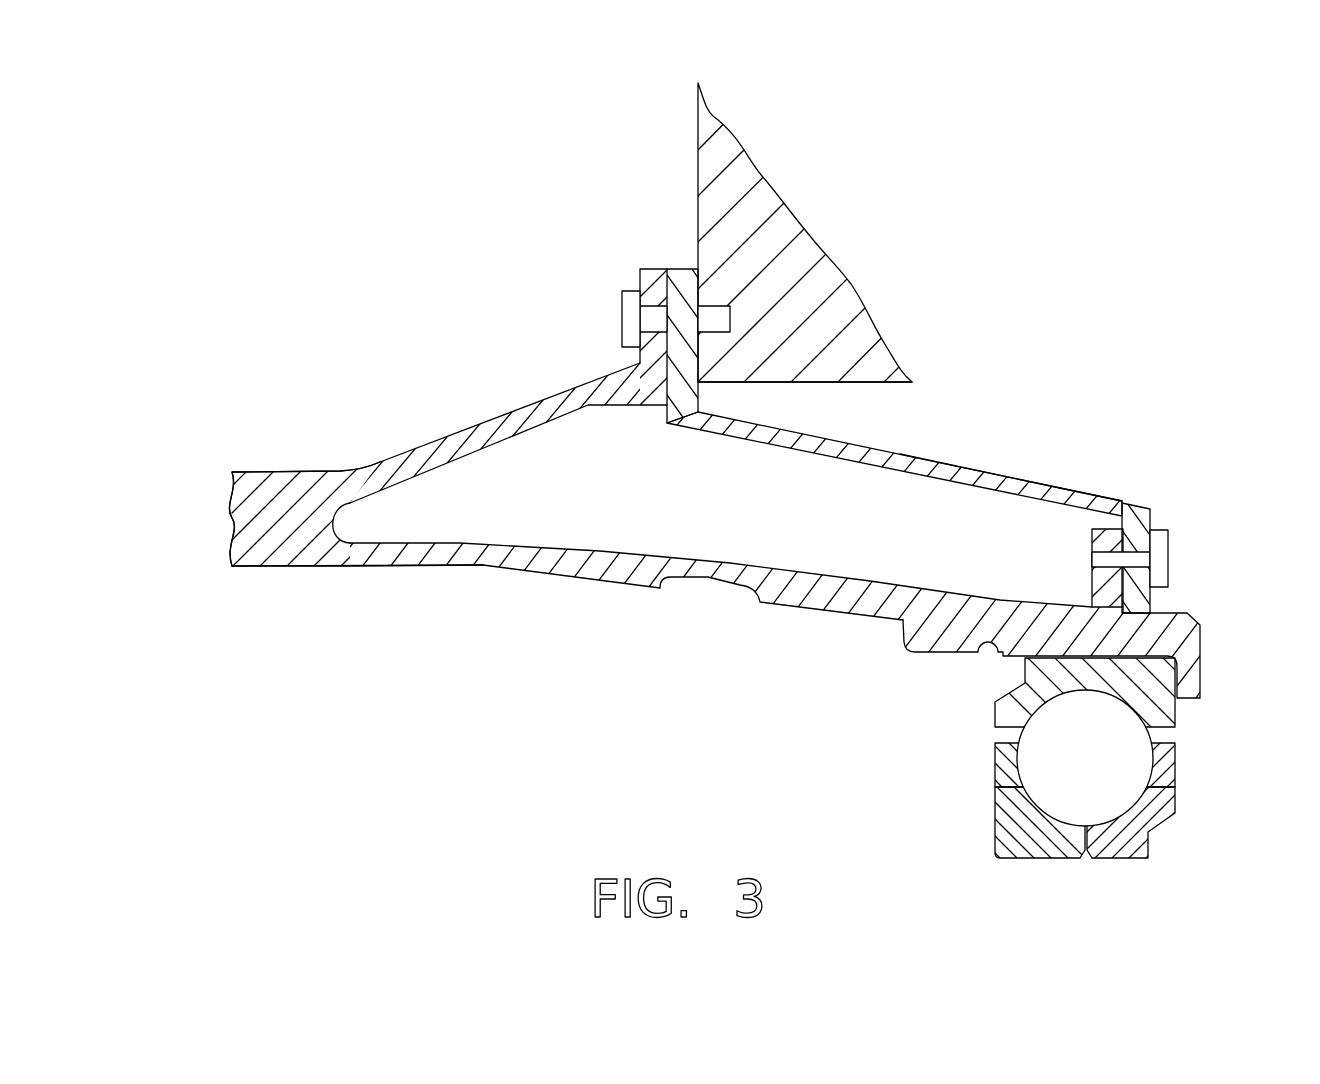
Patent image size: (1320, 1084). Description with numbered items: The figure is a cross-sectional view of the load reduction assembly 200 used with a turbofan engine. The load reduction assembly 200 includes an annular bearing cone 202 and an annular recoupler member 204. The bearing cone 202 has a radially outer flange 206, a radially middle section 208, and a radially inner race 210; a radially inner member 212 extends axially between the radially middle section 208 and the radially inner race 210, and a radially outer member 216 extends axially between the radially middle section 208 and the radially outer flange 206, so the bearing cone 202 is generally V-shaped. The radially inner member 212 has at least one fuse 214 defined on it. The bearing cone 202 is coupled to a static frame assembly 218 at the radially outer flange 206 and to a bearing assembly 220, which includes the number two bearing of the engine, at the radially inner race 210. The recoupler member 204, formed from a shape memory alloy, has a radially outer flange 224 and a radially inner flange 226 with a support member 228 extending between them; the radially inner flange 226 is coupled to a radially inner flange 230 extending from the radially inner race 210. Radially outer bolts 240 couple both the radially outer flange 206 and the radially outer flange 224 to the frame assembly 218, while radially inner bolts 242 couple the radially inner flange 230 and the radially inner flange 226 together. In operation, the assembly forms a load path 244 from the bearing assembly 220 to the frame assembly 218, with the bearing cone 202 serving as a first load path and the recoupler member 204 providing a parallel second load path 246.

The load reduction assembly 200 is at (1073, 266).
The annular bearing cone 202 is at (306, 580).
The annular recoupler member 204 is at (995, 425).
The radially outer flange 206 is at (655, 269).
The radially middle section 208 is at (230, 510).
The radially inner race 210 is at (1143, 655).
The radially inner member 212 is at (653, 552).
The fuse 214 is at (706, 590).
The radially outer member 216 is at (482, 423).
The static frame assembly 218 is at (777, 194).
The bearing assembly 220 is at (1150, 828).
The radially outer flange 224 is at (680, 269).
The radially inner flange 226 is at (1150, 596).
The support member 228 is at (840, 442).
The radially inner flange 230 is at (1092, 540).
The radially outer bolts 240 is at (622, 316).
The radially inner bolts 242 is at (1168, 558).
The load path 244 is at (490, 580).
The second load path 246 is at (1103, 478).